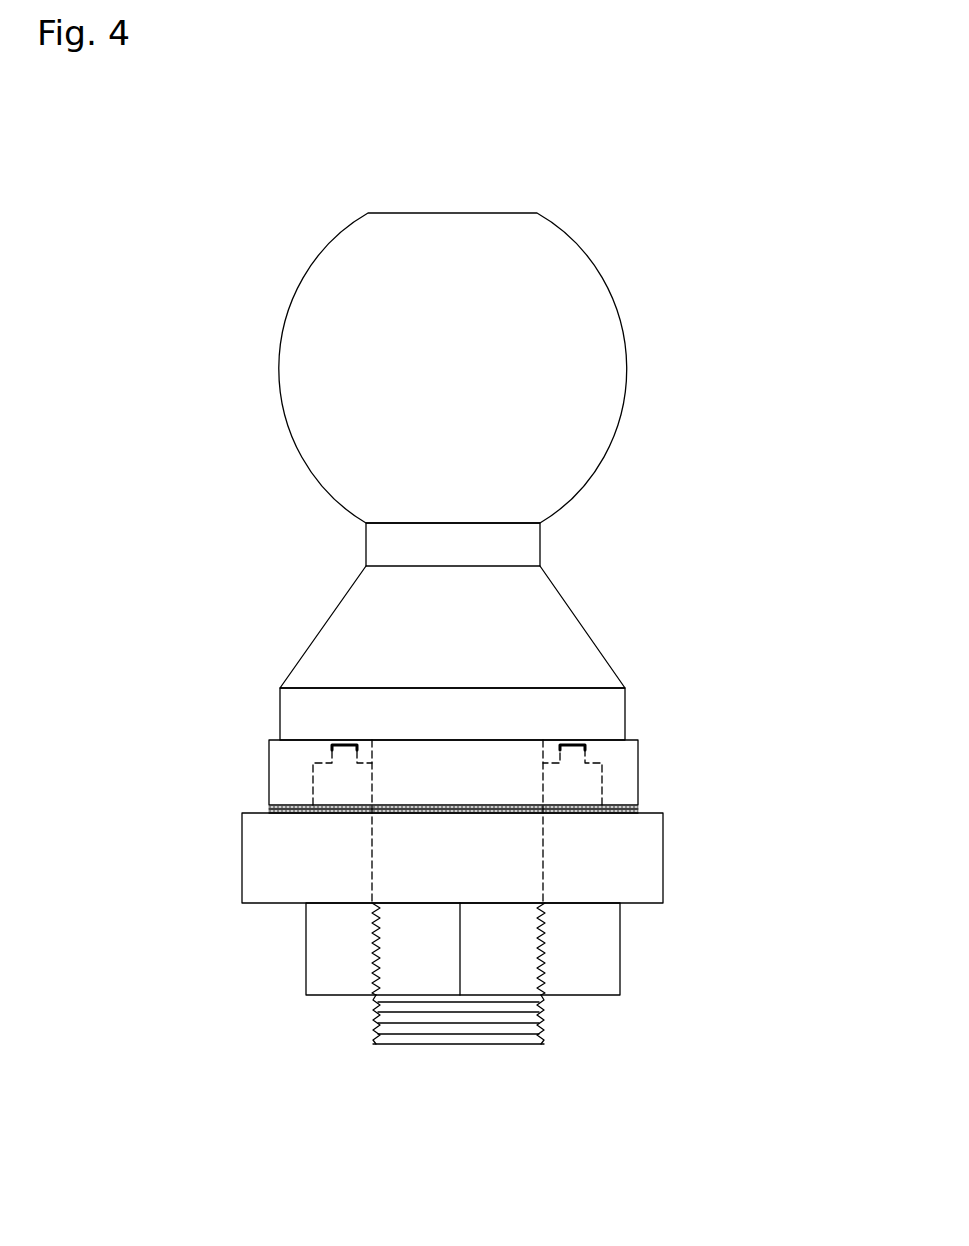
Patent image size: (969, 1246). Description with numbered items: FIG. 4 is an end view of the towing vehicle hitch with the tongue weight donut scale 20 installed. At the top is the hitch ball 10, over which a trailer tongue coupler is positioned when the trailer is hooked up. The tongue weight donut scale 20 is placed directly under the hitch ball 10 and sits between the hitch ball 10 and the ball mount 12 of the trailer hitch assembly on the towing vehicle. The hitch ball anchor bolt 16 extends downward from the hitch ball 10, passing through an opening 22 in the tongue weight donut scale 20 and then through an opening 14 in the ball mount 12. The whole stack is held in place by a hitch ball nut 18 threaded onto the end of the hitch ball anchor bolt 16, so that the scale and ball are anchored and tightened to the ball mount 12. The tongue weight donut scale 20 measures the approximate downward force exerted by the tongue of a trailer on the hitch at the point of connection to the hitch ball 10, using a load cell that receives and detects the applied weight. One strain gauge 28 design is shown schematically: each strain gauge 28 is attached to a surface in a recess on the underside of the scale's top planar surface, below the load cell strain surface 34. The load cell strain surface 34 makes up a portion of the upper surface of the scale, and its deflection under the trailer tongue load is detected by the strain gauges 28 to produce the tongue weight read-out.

The hitch ball 10 is at (383, 360).
The ball mount 12 is at (260, 853).
The opening 14 is at (373, 860).
The hitch ball anchor bolt 16 is at (473, 1039).
The hitch ball nut 18 is at (598, 959).
The tongue weight donut scale 20 is at (670, 760).
The opening 22 is at (373, 789).
The strain gauge 28 is at (333, 747).
The load cell strain surface 34 is at (343, 739).